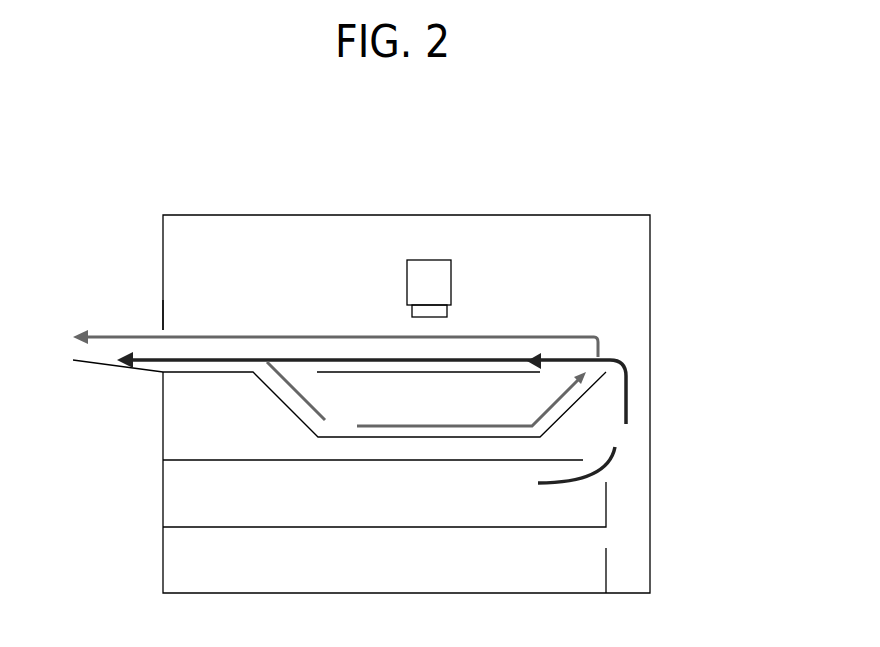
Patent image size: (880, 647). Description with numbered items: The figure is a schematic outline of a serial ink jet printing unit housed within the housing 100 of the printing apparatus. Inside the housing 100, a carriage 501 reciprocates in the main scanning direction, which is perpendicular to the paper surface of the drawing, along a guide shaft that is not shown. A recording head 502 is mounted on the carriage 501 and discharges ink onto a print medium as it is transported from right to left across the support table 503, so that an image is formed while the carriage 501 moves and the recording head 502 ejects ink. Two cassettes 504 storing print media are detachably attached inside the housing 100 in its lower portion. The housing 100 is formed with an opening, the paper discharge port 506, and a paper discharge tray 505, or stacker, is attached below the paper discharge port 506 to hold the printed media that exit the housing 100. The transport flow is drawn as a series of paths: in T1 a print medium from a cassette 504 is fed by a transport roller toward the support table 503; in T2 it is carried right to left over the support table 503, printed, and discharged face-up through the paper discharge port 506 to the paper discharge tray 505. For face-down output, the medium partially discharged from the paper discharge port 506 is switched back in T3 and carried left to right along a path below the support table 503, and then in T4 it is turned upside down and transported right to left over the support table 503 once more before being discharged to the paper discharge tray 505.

The housing 100 is at (652, 258).
The carriage 501 is at (431, 260).
The recording head 502 is at (447, 310).
The support table 503 is at (420, 373).
The cassette 504 is at (163, 492).
The paper discharge tray 505 is at (92, 363).
The paper discharge port 506 is at (160, 331).
The feeding transport path T1 is at (578, 451).
The printing and discharge transport path T2 is at (371, 384).
The switchback transport path T3 is at (426, 399).
The inverted re-transport path T4 is at (335, 339).